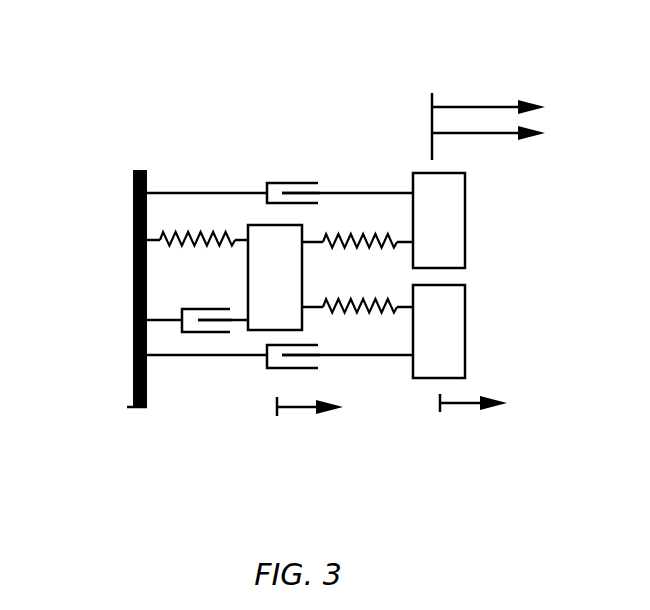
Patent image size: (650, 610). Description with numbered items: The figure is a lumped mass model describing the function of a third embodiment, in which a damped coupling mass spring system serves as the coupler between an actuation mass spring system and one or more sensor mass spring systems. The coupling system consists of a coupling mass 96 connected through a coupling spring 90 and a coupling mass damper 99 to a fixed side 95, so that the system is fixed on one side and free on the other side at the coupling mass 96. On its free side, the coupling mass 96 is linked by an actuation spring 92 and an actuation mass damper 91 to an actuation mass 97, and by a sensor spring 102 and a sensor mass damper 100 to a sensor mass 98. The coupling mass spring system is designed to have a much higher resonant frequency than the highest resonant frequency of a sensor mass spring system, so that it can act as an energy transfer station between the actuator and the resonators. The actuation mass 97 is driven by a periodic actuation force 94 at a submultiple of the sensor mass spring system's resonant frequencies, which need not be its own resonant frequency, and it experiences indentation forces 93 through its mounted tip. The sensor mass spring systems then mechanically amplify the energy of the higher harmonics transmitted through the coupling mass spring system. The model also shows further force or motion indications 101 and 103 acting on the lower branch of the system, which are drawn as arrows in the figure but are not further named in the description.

The coupling spring 90 is at (196, 228).
The actuation mass damper 91 is at (280, 182).
The actuation spring 92 is at (362, 232).
The indentation forces 93 is at (488, 128).
The periodic actuation force 94 is at (515, 75).
The fixed side 95 is at (132, 292).
The coupling mass 96 is at (275, 277).
The actuation mass 97 is at (439, 220).
The sensor mass 98 is at (439, 331).
The coupling mass damper 99 is at (197, 334).
The sensor mass damper 100 is at (276, 370).
The input arrow 101 is at (278, 418).
The sensor spring 102 is at (361, 309).
The output arrow 103 is at (445, 413).